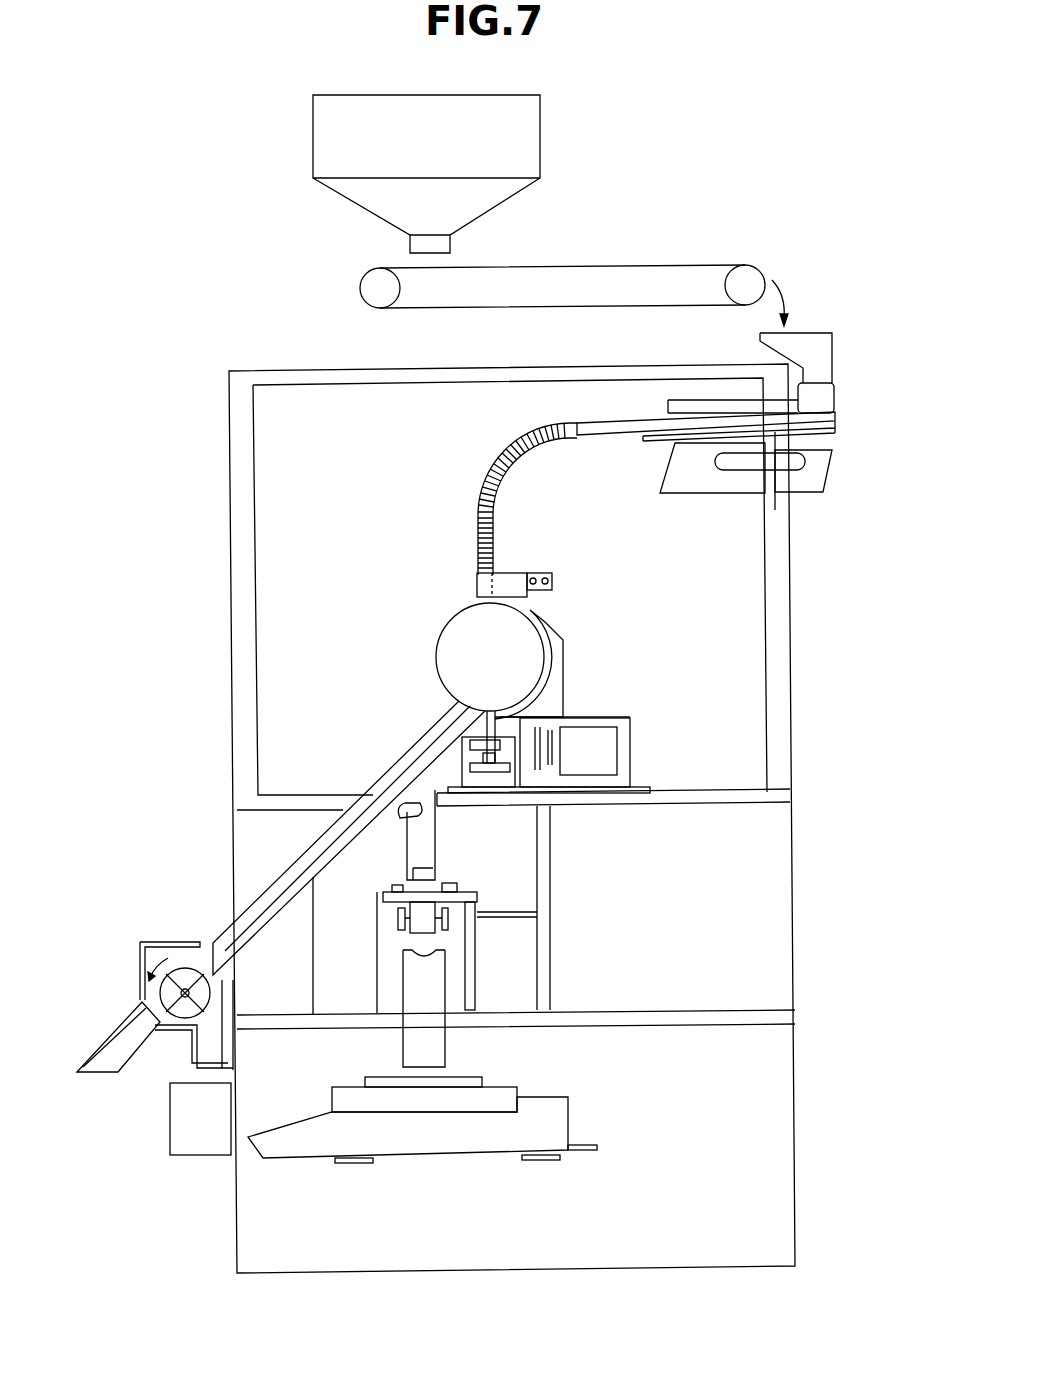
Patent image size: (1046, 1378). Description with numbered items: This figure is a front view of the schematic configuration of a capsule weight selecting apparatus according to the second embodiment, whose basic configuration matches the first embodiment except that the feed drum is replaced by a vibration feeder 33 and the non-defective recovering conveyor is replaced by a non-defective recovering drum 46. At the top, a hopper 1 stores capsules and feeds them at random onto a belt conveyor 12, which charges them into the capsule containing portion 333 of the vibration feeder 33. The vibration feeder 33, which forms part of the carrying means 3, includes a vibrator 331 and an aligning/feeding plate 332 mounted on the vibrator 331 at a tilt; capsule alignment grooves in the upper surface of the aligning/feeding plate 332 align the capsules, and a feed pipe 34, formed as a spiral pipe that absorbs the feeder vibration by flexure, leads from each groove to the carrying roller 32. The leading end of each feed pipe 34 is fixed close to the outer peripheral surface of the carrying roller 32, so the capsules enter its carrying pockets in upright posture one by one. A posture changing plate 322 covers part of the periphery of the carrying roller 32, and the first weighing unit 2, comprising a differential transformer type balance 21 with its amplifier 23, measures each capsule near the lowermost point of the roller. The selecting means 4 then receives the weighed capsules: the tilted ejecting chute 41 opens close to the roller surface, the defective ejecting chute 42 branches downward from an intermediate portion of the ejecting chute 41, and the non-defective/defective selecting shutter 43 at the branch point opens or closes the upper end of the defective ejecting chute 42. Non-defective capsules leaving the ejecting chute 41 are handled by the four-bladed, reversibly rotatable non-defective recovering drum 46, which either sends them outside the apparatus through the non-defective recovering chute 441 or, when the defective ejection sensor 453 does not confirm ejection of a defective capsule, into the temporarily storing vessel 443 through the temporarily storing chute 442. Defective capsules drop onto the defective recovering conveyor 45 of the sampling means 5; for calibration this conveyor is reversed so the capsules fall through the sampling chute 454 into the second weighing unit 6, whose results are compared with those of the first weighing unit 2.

The hopper 1 is at (528, 133).
The belt conveyor 12 is at (663, 283).
The first weighing unit 2 is at (638, 700).
The differential transformer type balance 21 is at (462, 737).
The amplifier 23 is at (612, 750).
The carrying means 3 is at (870, 522).
The carrying roller 32 is at (515, 622).
The vibration feeder 33 is at (808, 507).
The vibrator 331 is at (815, 467).
The aligning/feeding plate 332 is at (597, 420).
The capsule containing portion 333 is at (822, 396).
The feed pipe 34 is at (477, 536).
The posture changing plate 322 is at (568, 645).
The selecting means 4 is at (355, 783).
The ejecting chute 41 is at (305, 863).
The non-defective recovering chute 441 is at (110, 1035).
The temporarily storing chute 442 is at (142, 1000).
The temporarily storing vessel 443 is at (203, 1145).
The non-defective recovering drum 46 is at (185, 968).
The sampling means 5 is at (845, 830).
The defective ejecting chute 42 is at (437, 845).
The non-defective/defective selecting shutter 43 is at (415, 797).
The defective recovering conveyor 45 is at (423, 903).
The defective ejection sensor 453 is at (400, 893).
The sampling chute 454 is at (430, 1043).
The second weighing unit 6 is at (480, 1143).